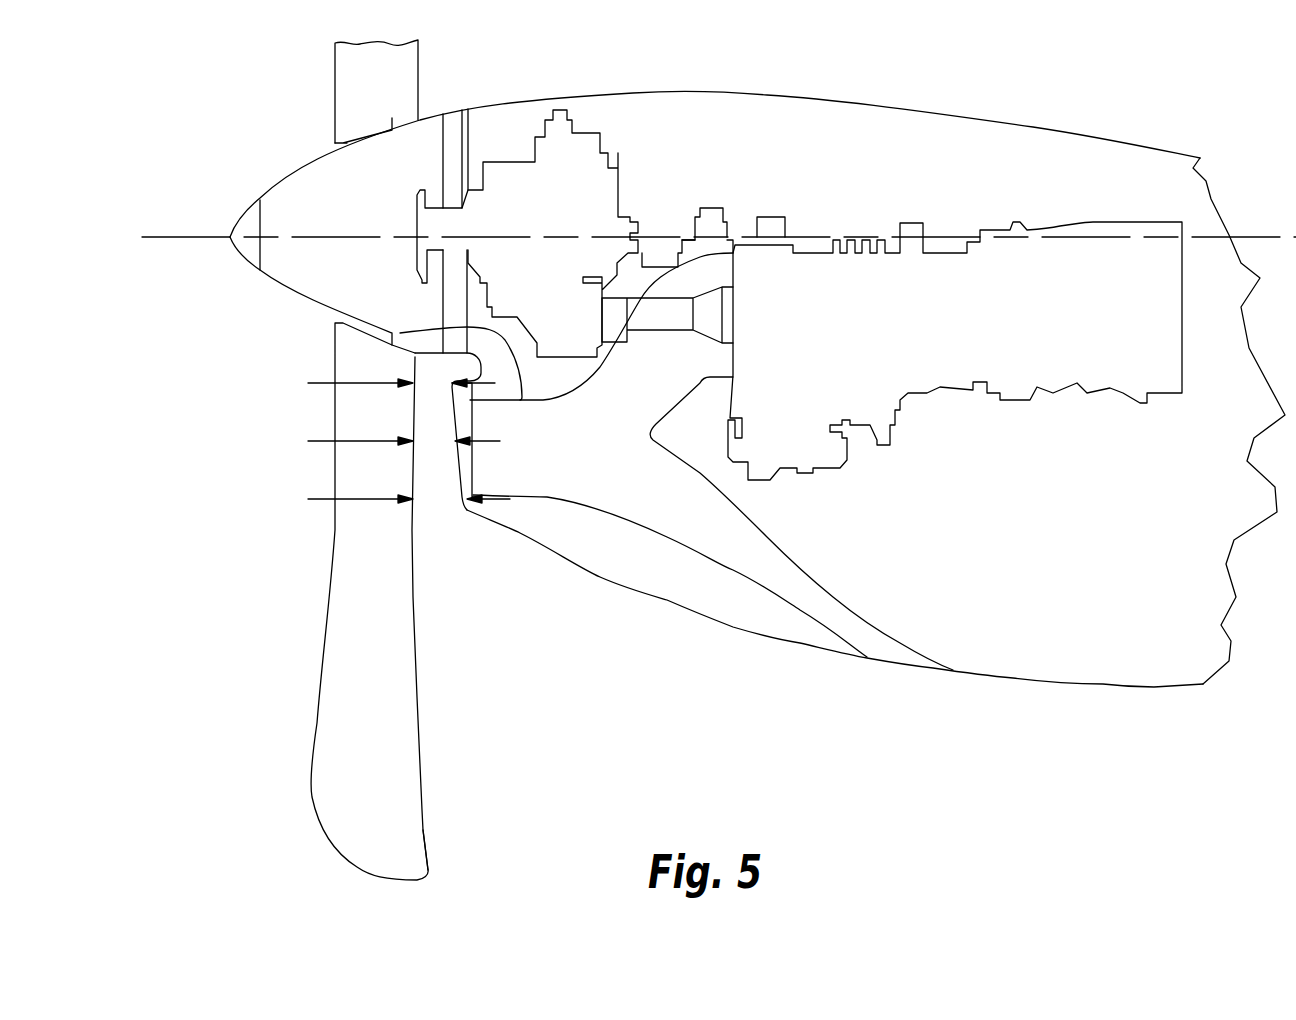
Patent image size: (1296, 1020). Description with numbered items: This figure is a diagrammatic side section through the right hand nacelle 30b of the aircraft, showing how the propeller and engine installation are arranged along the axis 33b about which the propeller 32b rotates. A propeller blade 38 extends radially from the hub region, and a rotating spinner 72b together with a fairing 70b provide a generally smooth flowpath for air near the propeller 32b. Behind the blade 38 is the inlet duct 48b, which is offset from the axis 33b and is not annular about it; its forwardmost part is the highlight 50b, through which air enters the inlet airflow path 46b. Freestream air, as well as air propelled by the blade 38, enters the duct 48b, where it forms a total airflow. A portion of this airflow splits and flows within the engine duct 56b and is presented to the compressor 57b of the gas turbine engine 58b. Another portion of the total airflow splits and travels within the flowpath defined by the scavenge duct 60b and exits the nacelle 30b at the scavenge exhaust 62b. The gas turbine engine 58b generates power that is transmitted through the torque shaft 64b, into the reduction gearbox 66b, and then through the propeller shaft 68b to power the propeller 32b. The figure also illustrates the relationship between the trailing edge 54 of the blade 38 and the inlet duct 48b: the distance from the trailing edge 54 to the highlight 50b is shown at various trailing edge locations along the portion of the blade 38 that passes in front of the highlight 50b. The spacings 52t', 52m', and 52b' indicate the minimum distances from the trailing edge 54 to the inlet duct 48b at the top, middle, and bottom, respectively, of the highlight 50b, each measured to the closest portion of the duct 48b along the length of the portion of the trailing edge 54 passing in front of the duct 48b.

The nacelle 30b is at (872, 103).
The propeller 32b is at (302, 172).
The axis 33b is at (1240, 243).
The propeller blade 38 is at (368, 650).
The inlet airflow path 46b is at (540, 445).
The inlet duct 48b is at (400, 333).
The highlight 50b is at (460, 503).
The spacing 52t' is at (381, 382).
The spacing 52m' is at (379, 441).
The spacing 52b' is at (387, 499).
The trailing edge 54 is at (423, 807).
The engine duct 56b is at (658, 362).
The compressor 57b is at (752, 280).
The gas turbine engine 58b is at (947, 248).
The scavenge duct 60b is at (822, 603).
The scavenge exhaust 62b is at (925, 665).
The torque shaft 64b is at (638, 283).
The reduction gearbox 66b is at (555, 197).
The propeller shaft 68b is at (444, 205).
The fairing 70b is at (463, 118).
The spinner 72b is at (327, 205).